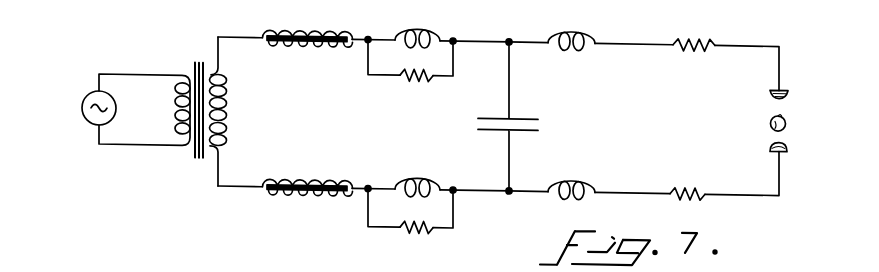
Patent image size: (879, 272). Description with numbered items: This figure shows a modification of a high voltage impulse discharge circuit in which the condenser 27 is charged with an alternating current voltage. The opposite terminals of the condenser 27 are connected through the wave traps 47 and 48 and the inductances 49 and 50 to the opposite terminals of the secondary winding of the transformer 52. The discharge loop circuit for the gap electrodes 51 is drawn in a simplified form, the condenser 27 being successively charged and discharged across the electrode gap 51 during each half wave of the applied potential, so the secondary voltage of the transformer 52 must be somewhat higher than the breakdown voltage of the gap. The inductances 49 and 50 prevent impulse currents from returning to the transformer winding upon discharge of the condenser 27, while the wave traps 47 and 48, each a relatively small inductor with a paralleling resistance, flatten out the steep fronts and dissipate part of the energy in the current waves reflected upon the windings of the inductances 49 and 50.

The transformer 52 is at (207, 58).
The inductance 49 is at (310, 47).
The inductance 50 is at (291, 177).
The wave trap 47 is at (377, 56).
The wave trap 48 is at (378, 195).
The condenser 27 is at (527, 122).
The gap electrodes 51 is at (770, 136).